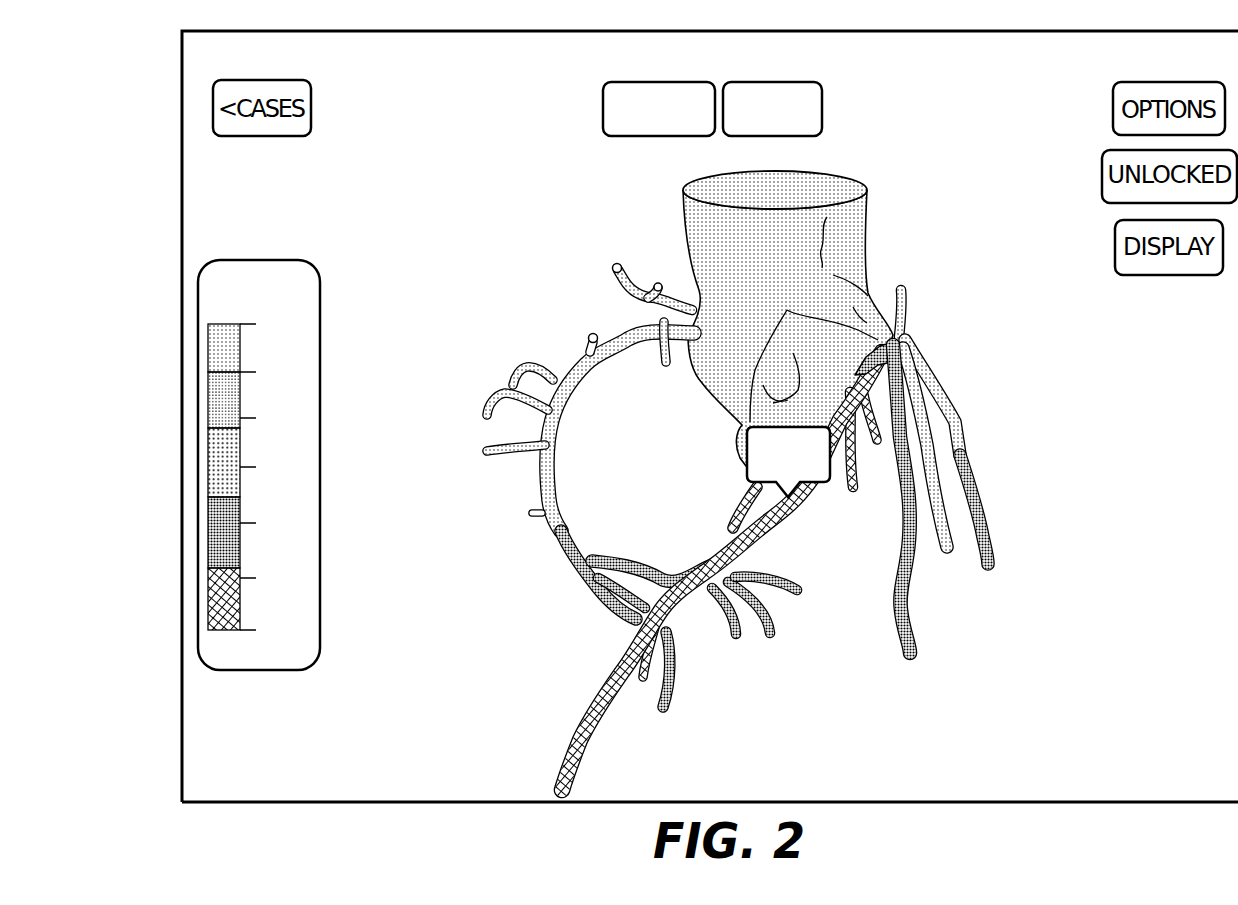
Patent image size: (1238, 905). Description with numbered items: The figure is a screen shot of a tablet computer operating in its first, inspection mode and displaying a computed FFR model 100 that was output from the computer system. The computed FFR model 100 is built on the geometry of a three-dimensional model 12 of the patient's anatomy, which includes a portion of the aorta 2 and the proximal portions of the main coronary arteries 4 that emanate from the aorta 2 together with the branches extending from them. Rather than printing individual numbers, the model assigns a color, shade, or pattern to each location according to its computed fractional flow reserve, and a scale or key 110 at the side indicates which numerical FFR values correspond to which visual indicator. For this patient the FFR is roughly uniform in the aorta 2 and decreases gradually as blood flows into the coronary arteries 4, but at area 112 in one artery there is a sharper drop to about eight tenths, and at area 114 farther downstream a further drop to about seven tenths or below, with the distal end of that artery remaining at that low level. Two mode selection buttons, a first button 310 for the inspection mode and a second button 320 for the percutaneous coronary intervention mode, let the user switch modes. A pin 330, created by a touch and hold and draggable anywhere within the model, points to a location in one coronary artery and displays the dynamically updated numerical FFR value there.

The aorta 2 is at (868, 212).
The main coronary arteries 4 is at (578, 355).
The three-dimensional model 12 is at (743, 467).
The computed FFR model 100 is at (975, 210).
The scale or key 110 is at (320, 353).
The area 112 is at (814, 355).
The area 114 is at (770, 342).
The first button 310 is at (603, 100).
The second button 320 is at (822, 100).
The pin 330 is at (745, 463).